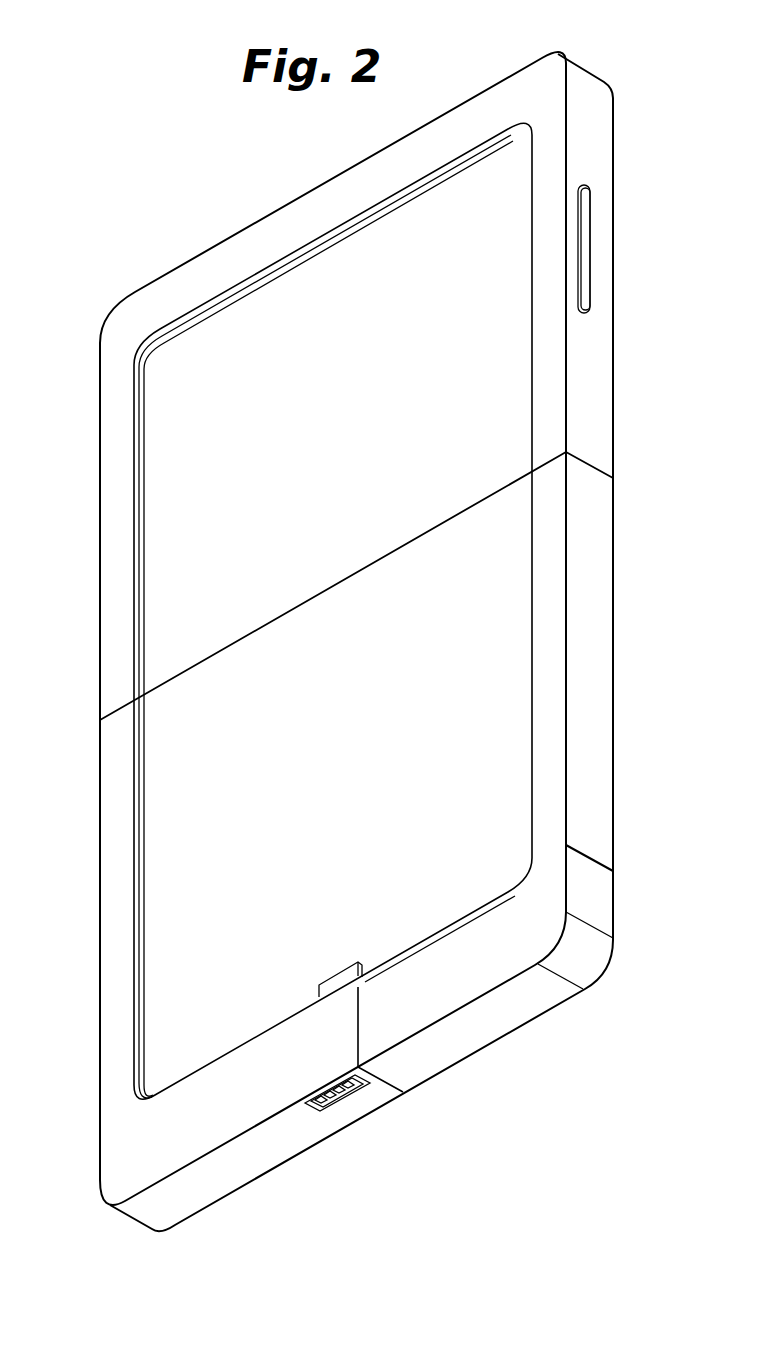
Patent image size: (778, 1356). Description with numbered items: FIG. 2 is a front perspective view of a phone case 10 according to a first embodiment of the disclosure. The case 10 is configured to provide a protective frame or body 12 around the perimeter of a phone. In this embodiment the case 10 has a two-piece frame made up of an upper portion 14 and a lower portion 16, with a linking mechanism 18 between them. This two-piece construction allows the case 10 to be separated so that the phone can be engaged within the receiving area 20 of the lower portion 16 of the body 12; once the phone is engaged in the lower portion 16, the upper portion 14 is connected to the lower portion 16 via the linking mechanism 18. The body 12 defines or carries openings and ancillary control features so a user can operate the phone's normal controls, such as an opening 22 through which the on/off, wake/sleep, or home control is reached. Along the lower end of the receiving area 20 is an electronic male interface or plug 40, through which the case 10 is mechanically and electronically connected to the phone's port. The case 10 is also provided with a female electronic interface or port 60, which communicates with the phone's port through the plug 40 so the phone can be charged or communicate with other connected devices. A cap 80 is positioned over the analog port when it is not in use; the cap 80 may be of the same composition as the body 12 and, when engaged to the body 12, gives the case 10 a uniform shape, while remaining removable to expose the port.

The phone case 10 is at (590, 54).
The body 12 is at (152, 287).
The upper portion 14 is at (606, 368).
The lower portion 16 is at (602, 599).
The linking mechanism 18 is at (601, 468).
The receiving area 20 is at (205, 508).
The opening 22 is at (594, 245).
The electronic male interface or plug 40 is at (328, 975).
The female electronic interface or port 60 is at (345, 1097).
The cap 80 is at (532, 931).